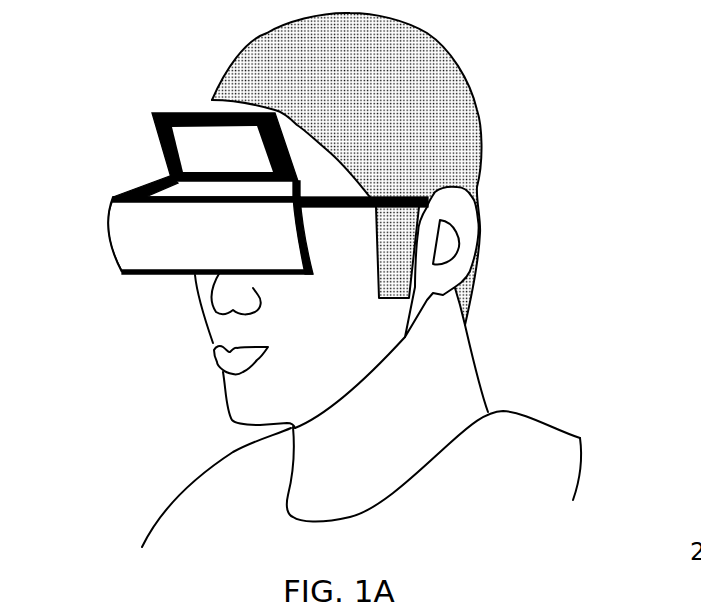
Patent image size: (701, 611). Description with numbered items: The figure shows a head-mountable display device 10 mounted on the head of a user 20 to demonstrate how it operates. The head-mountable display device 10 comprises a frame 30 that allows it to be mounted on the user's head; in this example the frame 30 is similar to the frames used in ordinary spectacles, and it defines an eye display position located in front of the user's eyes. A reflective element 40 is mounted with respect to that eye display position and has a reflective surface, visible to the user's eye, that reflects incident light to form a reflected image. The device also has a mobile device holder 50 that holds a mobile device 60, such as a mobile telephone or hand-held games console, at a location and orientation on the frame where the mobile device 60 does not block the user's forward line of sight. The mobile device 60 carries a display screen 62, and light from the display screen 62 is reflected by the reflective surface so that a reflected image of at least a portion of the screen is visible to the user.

The head-mountable display device 10 is at (243, 189).
The user 20 is at (443, 43).
The frame 30 is at (360, 210).
The reflective element 40 is at (150, 258).
The mobile device holder 50 is at (133, 190).
The mobile device 60 is at (223, 124).
The display screen 62 is at (233, 160).